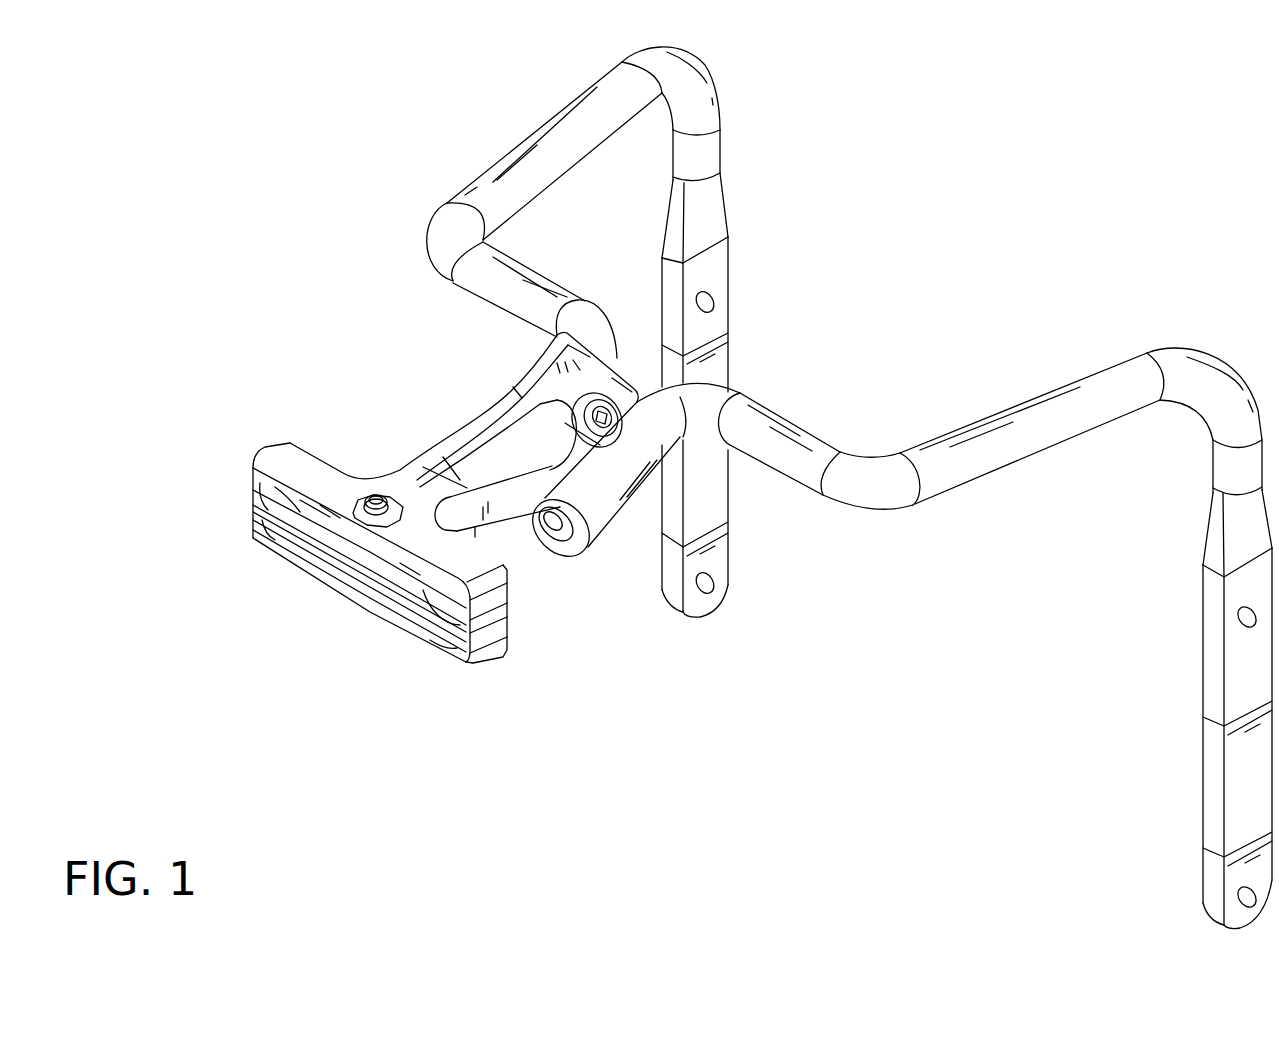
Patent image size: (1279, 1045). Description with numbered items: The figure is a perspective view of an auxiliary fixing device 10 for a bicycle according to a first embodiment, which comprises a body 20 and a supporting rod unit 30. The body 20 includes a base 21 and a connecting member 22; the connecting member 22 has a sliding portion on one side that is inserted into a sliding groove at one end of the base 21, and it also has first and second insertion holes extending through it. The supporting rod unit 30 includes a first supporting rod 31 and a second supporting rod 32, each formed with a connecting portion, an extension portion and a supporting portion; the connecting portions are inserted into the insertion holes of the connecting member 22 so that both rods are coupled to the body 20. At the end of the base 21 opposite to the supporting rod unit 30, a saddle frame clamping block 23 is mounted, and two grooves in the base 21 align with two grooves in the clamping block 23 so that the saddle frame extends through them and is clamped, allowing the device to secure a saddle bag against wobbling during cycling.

The fixing device 10 is at (340, 130).
The body 20 is at (372, 445).
The base 21 is at (307, 472).
The connecting member 22 is at (602, 548).
The saddle frame clamping block 23 is at (408, 617).
The supporting rod unit 30 is at (810, 130).
The first supporting rod 31 is at (869, 555).
The second supporting rod 32 is at (395, 236).